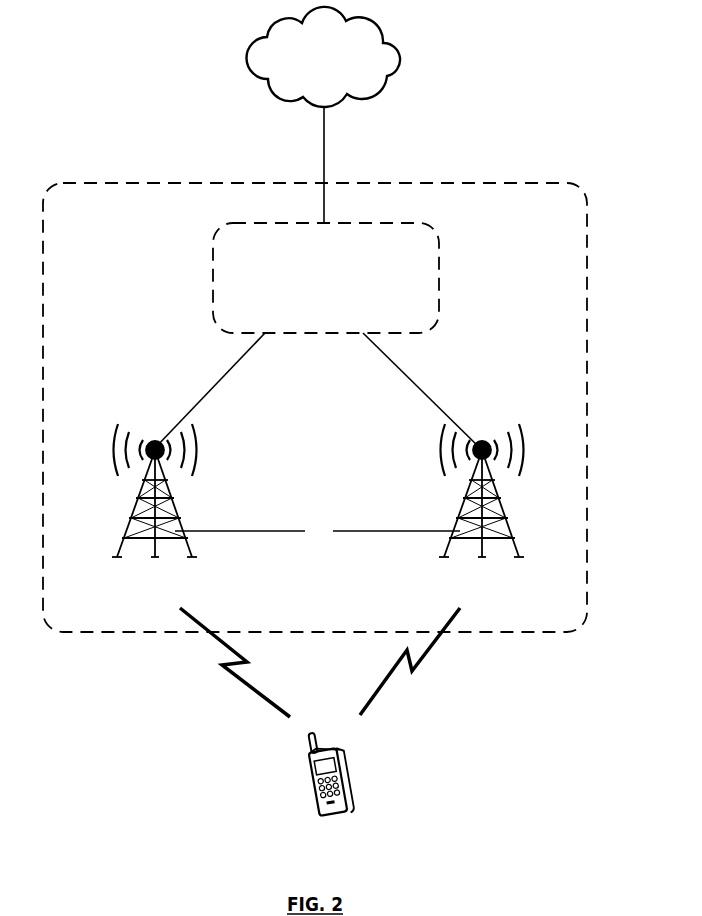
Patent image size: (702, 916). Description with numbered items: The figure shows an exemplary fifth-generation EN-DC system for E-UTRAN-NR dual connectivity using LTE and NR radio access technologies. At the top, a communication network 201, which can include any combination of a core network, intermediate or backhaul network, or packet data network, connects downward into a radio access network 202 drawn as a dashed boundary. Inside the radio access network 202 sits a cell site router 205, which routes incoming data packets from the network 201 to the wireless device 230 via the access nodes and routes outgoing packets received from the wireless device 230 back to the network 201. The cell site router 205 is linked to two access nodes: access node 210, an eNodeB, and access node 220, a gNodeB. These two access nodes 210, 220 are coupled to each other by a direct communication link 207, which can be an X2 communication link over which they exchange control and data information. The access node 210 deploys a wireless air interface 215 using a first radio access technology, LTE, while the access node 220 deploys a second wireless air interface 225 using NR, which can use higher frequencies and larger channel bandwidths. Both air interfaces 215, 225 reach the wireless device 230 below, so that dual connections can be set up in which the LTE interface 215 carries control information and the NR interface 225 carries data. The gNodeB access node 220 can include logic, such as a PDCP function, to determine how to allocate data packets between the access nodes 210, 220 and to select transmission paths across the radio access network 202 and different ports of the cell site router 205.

The communication network 201 is at (341, 68).
The radio access network 202 is at (118, 183).
The cell site router 205 is at (309, 303).
The direct communication link 207 is at (382, 531).
The access node 210 is at (131, 518).
The wireless air interface 215 is at (243, 680).
The access node 220 is at (506, 518).
The wireless air interface 225 is at (418, 667).
The wireless device 230 is at (317, 804).